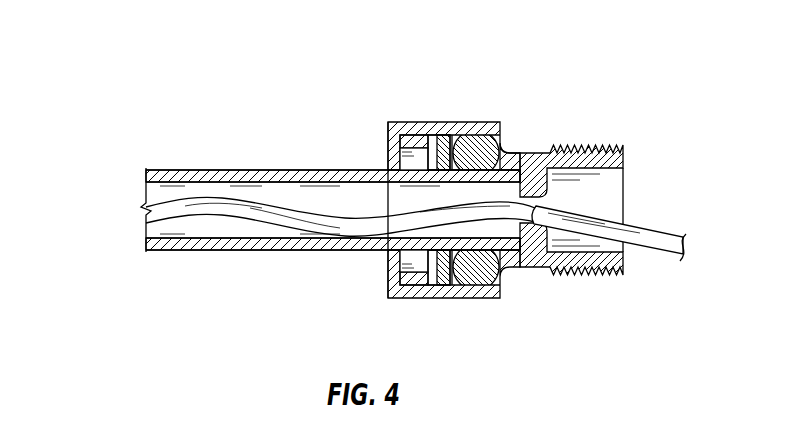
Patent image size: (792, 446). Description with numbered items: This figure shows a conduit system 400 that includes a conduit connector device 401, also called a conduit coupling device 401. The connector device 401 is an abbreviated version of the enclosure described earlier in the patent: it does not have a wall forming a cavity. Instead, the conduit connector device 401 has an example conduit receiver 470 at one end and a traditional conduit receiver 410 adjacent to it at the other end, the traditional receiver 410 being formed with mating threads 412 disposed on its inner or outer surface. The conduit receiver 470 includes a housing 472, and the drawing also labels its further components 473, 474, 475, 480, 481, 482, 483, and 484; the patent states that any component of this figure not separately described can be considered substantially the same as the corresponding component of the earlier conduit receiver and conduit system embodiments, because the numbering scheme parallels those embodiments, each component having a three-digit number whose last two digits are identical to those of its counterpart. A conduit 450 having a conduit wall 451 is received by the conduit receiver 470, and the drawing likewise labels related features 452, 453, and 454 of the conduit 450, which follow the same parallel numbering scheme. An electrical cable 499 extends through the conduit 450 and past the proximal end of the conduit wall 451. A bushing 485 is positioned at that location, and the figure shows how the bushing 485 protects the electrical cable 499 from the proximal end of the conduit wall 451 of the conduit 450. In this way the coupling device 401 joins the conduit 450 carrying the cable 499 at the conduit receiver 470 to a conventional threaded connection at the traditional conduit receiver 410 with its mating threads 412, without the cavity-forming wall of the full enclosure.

The conduit system 400 is at (162, 80).
The conduit connector device 401 is at (524, 110).
The traditional conduit receiver 410 is at (598, 178).
The mating threads 412 is at (617, 145).
The conduit 450 is at (301, 202).
The conduit wall 451 is at (290, 175).
The tube wall 452 is at (227, 172).
The lumen 453 is at (163, 229).
The inner surface of tube 454 is at (180, 180).
The conduit receiver 470 is at (445, 186).
The housing 472 is at (409, 117).
The nut end wall 473 is at (390, 165).
The ball seal 474 is at (478, 140).
The nut shoulder 475 is at (500, 146).
The seal assembly 480 is at (409, 292).
The upper sleeve 481 is at (403, 140).
The lower sleeve 482 is at (410, 282).
The lower ball seal 483 is at (450, 280).
The seal gap 484 is at (468, 152).
The bushing 485 is at (532, 220).
The electrical cable 499 is at (163, 210).